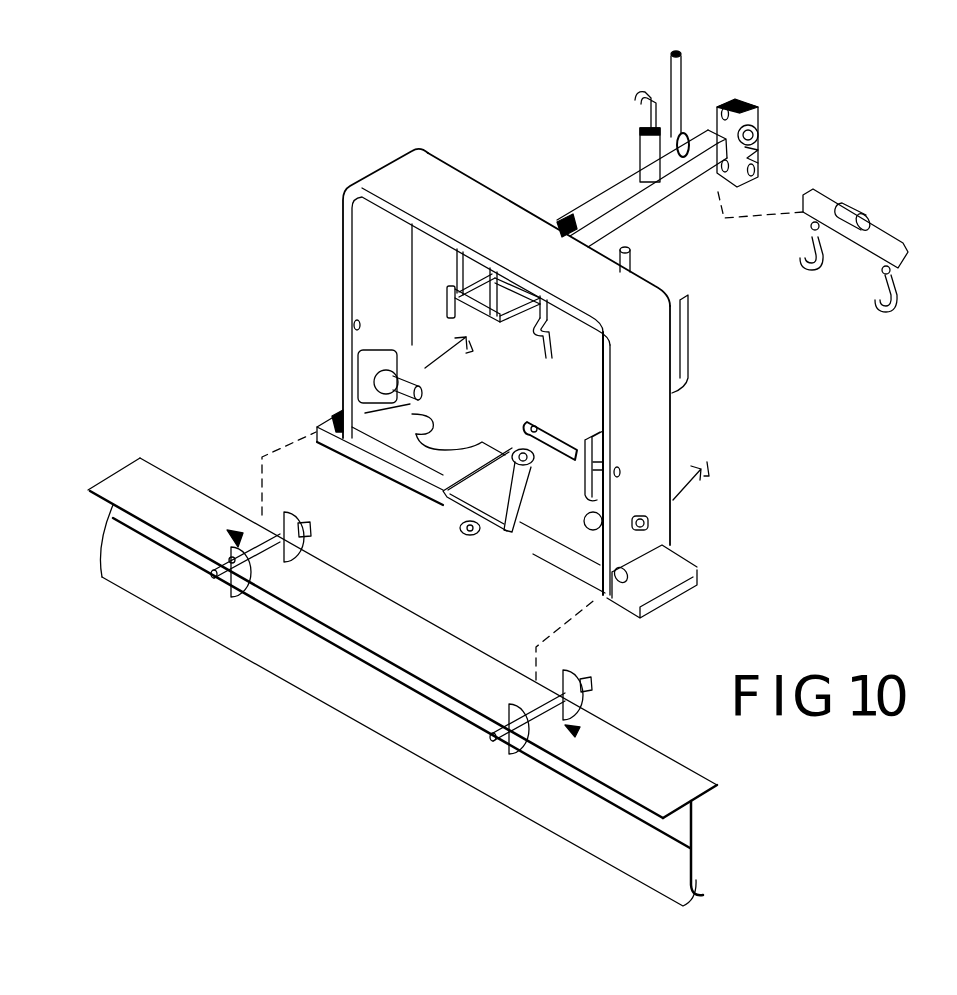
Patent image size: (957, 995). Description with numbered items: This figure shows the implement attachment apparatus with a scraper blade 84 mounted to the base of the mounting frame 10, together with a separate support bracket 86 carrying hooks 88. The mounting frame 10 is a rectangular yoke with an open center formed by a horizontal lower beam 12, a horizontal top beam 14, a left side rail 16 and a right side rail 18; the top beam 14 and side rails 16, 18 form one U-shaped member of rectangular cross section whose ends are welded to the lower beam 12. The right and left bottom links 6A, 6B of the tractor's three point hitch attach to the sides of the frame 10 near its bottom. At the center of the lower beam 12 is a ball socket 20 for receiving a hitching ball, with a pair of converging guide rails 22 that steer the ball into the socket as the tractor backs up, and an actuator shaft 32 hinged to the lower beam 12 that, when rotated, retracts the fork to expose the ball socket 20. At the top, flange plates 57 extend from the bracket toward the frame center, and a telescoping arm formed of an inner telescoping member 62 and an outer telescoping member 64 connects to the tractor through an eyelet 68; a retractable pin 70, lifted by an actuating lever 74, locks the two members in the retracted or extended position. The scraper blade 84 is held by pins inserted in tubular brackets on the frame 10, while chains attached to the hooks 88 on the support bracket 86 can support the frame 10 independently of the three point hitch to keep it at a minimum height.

The mounting frame 10 is at (365, 295).
The lower beam 12 is at (403, 448).
The top beam 14 is at (633, 290).
The left side rail 16 is at (363, 350).
The right side rail 18 is at (657, 443).
The ball socket 20 is at (497, 523).
The guide rails 22 is at (447, 500).
The actuator shaft 32 is at (693, 358).
The flange plates 57 is at (447, 296).
The inner telescoping member 62 is at (558, 222).
The outer telescoping member 64 is at (618, 197).
The eyelet 68 is at (757, 117).
The retractable pin 70 is at (647, 153).
The actuating lever 74 is at (682, 107).
The scraper blade 84 is at (303, 672).
The support bracket 86 is at (882, 230).
The hooks 88 is at (877, 307).
The right bottom link 6A is at (436, 366).
The left bottom link 6B is at (683, 488).